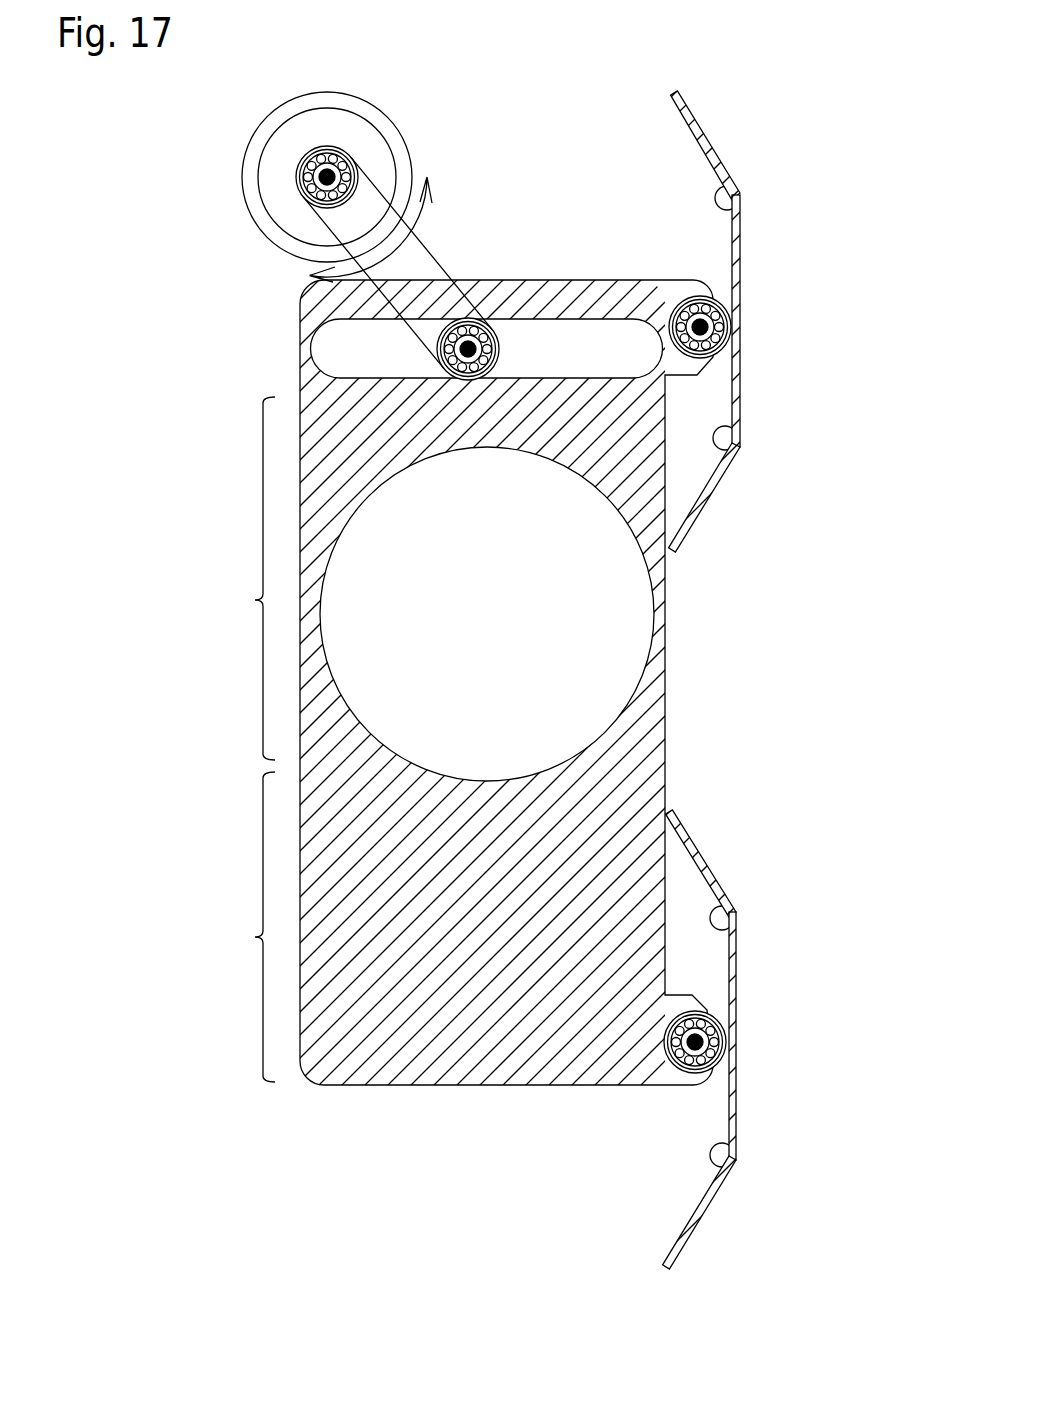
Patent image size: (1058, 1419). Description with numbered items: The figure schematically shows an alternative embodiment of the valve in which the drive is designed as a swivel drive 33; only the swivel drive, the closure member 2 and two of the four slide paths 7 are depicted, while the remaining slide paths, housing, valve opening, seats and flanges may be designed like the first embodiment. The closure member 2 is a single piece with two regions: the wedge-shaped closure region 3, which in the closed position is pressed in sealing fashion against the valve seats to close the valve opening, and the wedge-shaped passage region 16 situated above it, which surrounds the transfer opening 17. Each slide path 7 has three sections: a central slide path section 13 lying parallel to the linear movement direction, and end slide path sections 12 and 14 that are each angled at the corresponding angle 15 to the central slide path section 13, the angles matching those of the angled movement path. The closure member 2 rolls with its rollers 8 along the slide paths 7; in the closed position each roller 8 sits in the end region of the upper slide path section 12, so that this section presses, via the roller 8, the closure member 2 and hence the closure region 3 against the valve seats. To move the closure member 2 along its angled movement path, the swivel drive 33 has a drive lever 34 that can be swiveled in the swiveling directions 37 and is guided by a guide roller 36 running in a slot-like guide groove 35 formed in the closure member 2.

The closure member 2 is at (470, 1057).
The closure region 3 is at (251, 927).
The slide path 7 is at (739, 675).
The roller 8 is at (700, 326).
The slide path section 12 is at (707, 142).
The central slide path section 13 is at (737, 262).
The slide path section 14 is at (704, 497).
The angle 15 is at (725, 203).
The passage region 16 is at (248, 578).
The transfer opening 17 is at (348, 667).
The swivel drive 33 is at (373, 140).
The drive lever 34 is at (435, 270).
The guide groove 35 is at (589, 347).
The guide roller 36 is at (497, 335).
The swiveling direction 37 is at (420, 222).